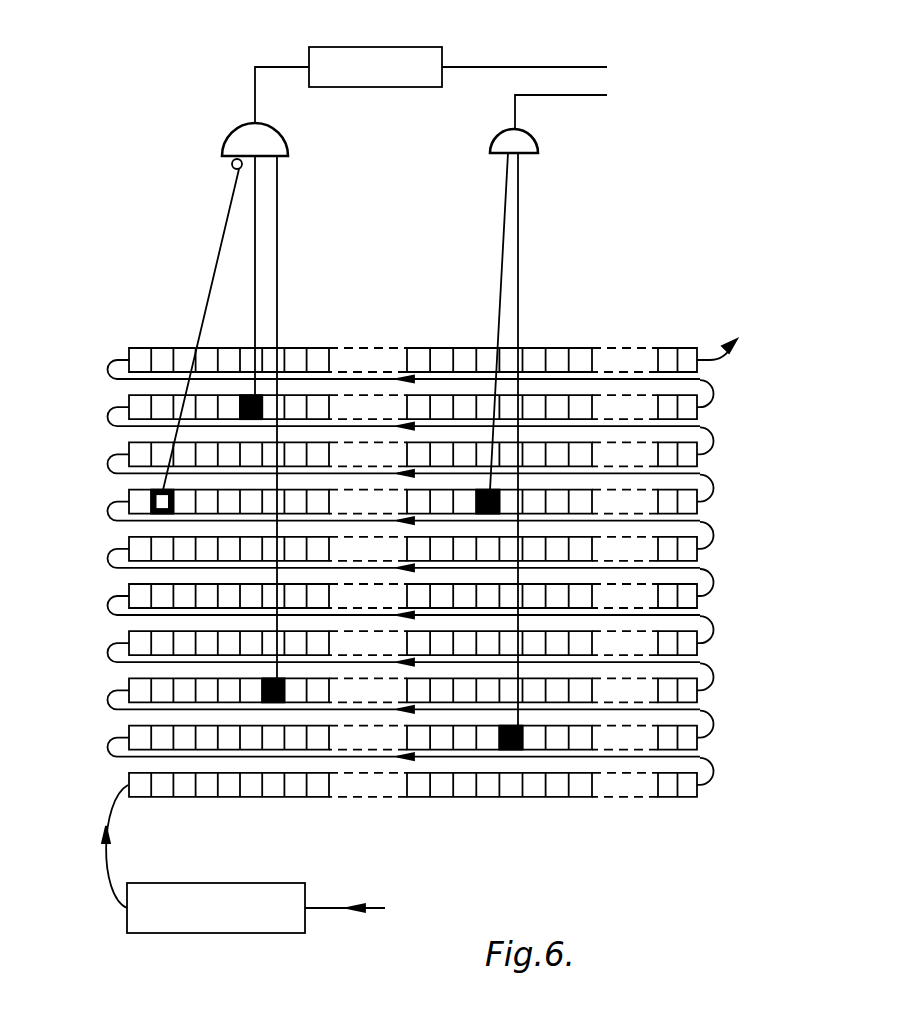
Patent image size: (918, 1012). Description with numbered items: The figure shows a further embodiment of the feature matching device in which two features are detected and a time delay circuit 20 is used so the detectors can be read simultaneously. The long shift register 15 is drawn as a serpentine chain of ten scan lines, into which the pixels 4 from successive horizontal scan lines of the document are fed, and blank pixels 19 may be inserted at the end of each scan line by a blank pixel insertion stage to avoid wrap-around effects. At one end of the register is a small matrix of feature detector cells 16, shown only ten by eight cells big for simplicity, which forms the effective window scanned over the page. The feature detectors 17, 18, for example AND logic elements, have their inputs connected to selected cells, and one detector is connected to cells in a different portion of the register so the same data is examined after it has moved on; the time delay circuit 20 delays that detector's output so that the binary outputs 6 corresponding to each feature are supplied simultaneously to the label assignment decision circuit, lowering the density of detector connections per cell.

The pixels 4 is at (375, 908).
The binary outputs 6 is at (533, 93).
The shift register 15 is at (739, 808).
The matrix of feature detector cells 16 is at (308, 808).
The feature detector 17 is at (265, 143).
The feature detector 18 is at (523, 146).
The blank pixels 19 is at (272, 927).
The time delay circuit 20 is at (412, 53).